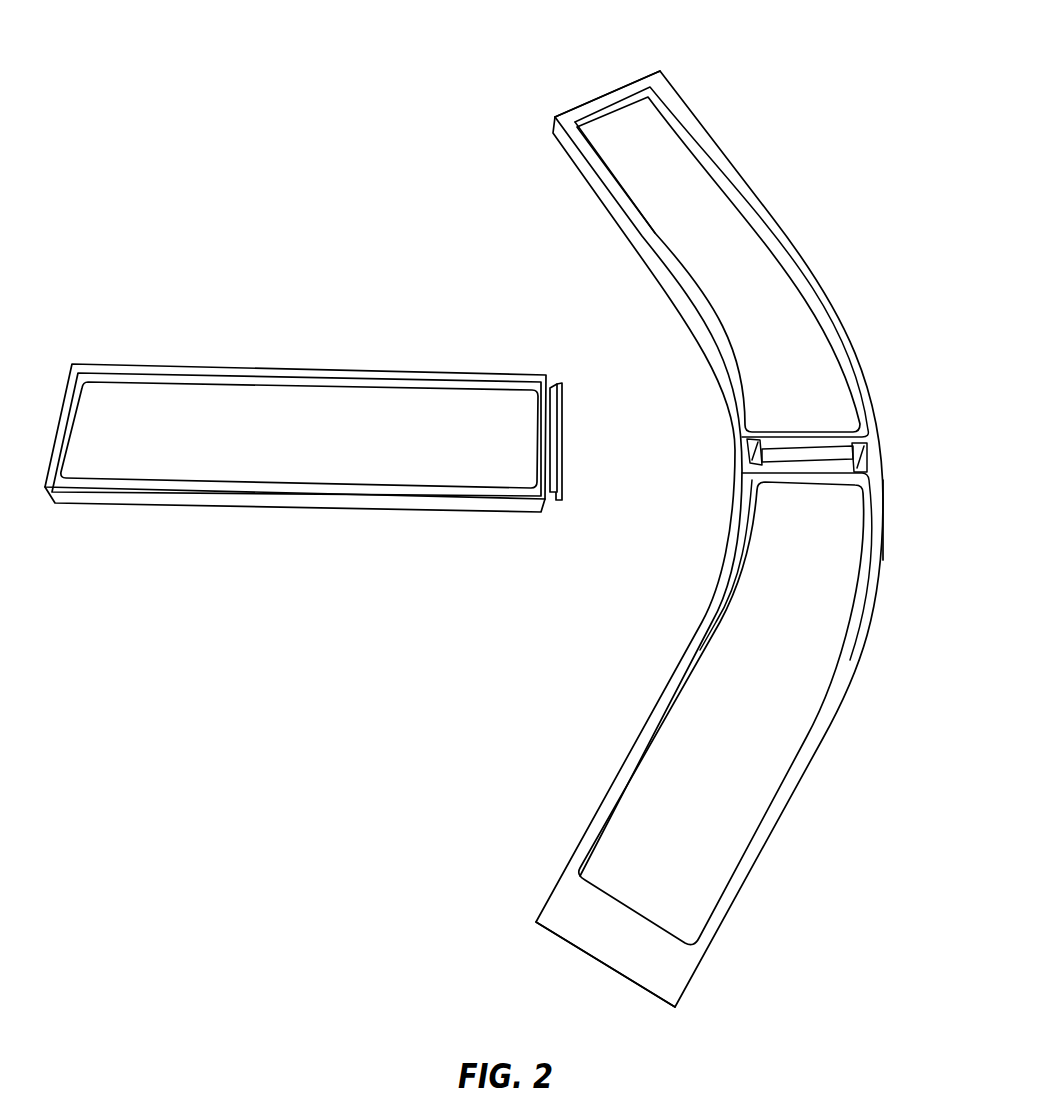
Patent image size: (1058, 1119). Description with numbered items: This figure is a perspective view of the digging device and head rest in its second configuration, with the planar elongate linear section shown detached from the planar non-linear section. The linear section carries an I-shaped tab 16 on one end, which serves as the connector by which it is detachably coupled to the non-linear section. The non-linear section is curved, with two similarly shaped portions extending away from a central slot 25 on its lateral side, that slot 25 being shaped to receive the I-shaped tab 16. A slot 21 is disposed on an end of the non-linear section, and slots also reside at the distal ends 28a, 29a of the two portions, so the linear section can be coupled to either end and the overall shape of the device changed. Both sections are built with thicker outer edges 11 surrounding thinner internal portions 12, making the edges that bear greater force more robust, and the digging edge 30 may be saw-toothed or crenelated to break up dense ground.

The outer edges 11 is at (303, 490).
The internal portions 12 is at (413, 415).
The I-shaped tab 16 is at (565, 460).
The slot 21 is at (553, 943).
The slot 25 is at (793, 450).
The distal end of portion 28a is at (603, 95).
The distal end of portion 29a is at (608, 970).
The digging edge 30 is at (890, 456).